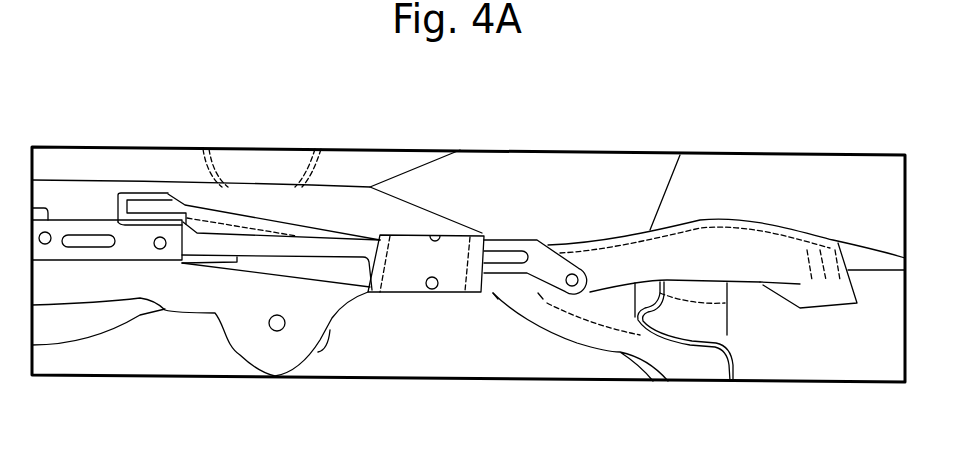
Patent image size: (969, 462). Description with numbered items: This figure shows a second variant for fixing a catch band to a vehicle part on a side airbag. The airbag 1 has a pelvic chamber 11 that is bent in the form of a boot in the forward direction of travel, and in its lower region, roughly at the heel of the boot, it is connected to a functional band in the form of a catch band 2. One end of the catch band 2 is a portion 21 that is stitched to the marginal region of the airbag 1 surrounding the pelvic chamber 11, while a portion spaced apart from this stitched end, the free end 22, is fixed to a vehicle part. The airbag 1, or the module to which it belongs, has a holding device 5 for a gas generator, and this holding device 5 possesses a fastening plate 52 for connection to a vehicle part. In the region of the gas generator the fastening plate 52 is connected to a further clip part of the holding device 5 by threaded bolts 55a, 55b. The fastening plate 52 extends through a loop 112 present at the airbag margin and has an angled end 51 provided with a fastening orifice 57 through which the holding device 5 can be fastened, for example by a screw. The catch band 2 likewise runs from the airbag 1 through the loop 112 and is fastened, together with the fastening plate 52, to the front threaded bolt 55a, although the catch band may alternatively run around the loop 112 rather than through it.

The airbag 1 is at (774, 122).
The catch band 2 is at (714, 253).
The holding device 5 is at (279, 212).
The pelvic chamber 11 is at (877, 198).
The portion of the catch band 21 is at (832, 250).
The free end of the catch band 22 is at (510, 273).
The angled end 51 is at (548, 257).
The fastening plate 52 is at (343, 247).
The threaded bolt 55a is at (47, 234).
The threaded bolt 55b is at (162, 238).
The fastening orifice 57 is at (574, 278).
The loop 112 is at (410, 247).